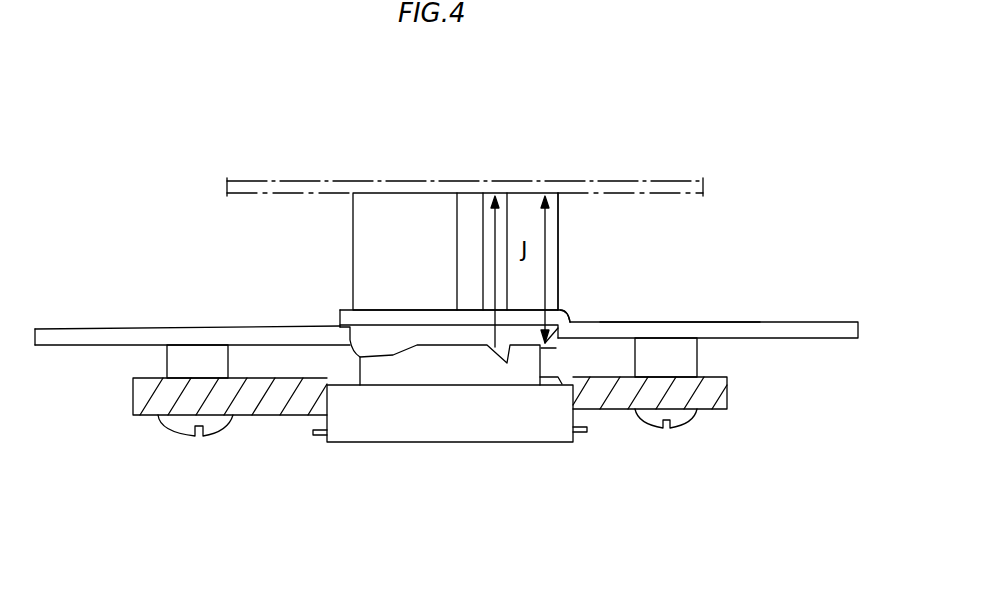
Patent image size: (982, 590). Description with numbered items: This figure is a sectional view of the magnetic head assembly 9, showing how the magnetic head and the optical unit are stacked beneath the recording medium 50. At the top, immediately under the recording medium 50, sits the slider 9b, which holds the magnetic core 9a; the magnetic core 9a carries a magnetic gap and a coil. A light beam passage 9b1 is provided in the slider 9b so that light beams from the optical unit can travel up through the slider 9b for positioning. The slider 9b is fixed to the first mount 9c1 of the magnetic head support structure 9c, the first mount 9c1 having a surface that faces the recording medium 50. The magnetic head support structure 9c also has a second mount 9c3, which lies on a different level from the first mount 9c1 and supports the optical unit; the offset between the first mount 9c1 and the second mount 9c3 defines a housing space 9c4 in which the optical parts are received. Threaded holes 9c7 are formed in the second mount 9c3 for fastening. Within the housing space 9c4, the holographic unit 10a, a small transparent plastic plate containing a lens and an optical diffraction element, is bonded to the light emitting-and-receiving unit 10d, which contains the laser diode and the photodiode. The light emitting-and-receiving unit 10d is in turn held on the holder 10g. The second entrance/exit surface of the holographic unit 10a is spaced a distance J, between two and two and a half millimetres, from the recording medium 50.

The magnetic head assembly 9 is at (554, 196).
The magnetic core 9a is at (463, 196).
The slider 9b is at (384, 196).
The light beam passage 9b1 is at (508, 196).
The magnetic head support structure 9c is at (755, 322).
The first mount 9c1 is at (563, 310).
The second mount 9c3 is at (650, 322).
The housing space 9c4 is at (576, 316).
The threaded holes 9c7 is at (170, 372).
The holographic unit 10a is at (326, 323).
The light emitting-and-receiving unit 10d is at (497, 430).
The holder 10g is at (722, 397).
The recording medium 50 is at (664, 183).